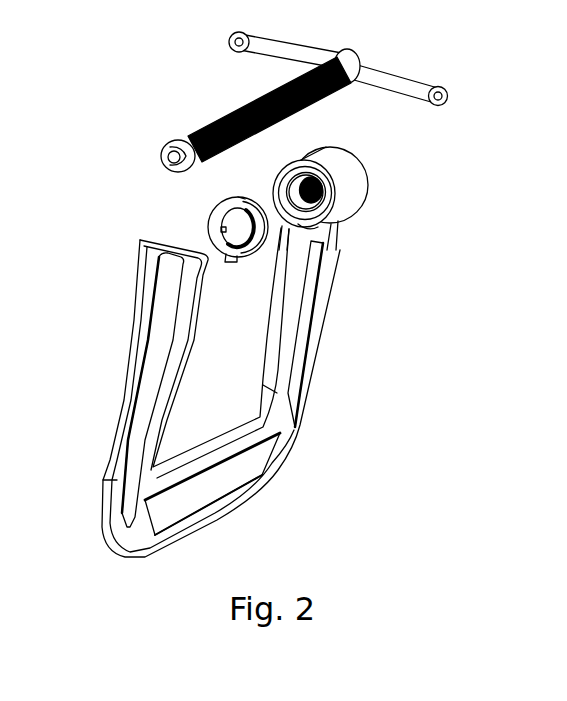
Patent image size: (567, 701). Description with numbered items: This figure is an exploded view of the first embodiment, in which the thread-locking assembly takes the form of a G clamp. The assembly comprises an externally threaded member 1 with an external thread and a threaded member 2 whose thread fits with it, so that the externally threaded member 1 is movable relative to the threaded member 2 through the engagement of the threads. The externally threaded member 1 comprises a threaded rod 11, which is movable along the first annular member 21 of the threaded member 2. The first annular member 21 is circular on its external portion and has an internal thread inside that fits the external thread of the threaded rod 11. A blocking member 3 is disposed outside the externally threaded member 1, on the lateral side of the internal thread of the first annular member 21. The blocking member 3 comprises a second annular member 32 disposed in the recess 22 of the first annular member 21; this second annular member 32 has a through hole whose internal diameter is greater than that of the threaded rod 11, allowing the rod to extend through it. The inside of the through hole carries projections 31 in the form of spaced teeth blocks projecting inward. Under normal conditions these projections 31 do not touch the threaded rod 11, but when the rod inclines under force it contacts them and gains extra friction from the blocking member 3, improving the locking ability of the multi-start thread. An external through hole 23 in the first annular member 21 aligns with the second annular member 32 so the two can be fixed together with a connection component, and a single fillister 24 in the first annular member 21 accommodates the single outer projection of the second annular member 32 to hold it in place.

The externally threaded member 1 is at (232, 90).
The threaded rod 11 is at (233, 107).
The threaded member 2 is at (372, 163).
The first annular member 21 is at (341, 183).
The recess 22 is at (318, 212).
The external through hole 23 is at (305, 182).
The fillister 24 is at (310, 233).
The blocking member 3 is at (187, 210).
The projections 31 is at (227, 233).
The second annular member 32 is at (222, 200).